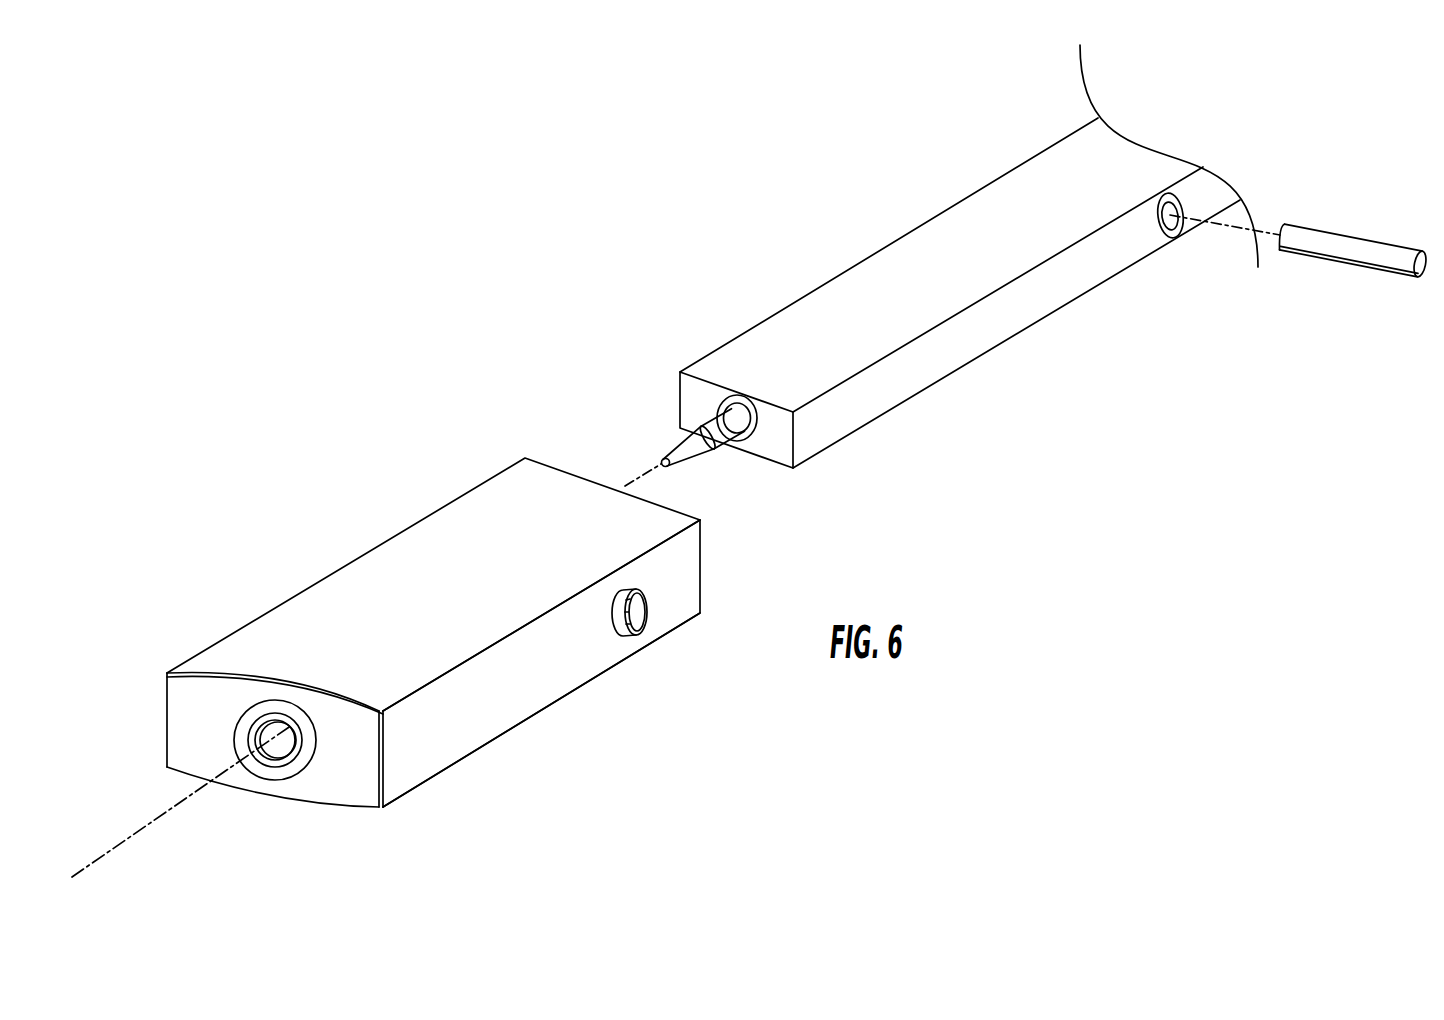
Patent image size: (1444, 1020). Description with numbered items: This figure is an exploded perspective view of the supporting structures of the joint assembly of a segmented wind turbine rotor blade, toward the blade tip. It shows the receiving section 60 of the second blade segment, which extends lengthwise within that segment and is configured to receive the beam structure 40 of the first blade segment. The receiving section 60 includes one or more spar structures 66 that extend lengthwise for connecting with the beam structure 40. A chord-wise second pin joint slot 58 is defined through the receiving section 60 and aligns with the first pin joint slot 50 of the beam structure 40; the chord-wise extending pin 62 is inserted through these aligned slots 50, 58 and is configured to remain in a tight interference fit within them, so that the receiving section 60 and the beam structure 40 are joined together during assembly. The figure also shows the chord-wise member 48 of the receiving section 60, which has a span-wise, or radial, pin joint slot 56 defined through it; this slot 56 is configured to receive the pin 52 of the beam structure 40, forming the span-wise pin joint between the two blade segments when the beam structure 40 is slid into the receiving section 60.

The beam structure 40 is at (987, 212).
The chord-wise member 48 is at (202, 737).
The first pin joint slot 50 is at (1172, 232).
The pin joint 52 is at (683, 468).
The span-wise pin joint slot 56 is at (280, 743).
The chord-wise second pin joint slot 58 is at (633, 627).
The receiving section 60 is at (330, 573).
The chord-wise extending pin 62 is at (1365, 238).
The spar structure 66 is at (560, 697).